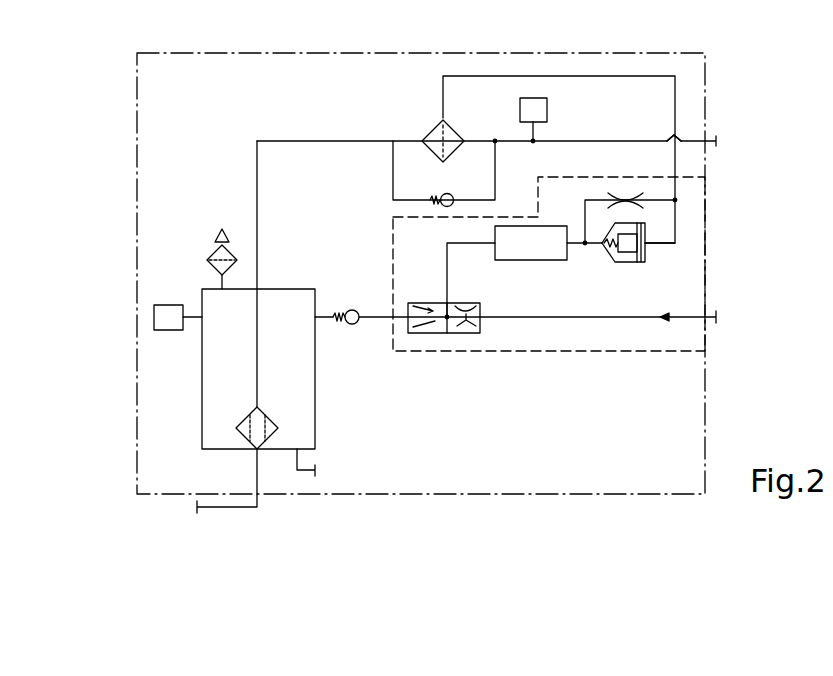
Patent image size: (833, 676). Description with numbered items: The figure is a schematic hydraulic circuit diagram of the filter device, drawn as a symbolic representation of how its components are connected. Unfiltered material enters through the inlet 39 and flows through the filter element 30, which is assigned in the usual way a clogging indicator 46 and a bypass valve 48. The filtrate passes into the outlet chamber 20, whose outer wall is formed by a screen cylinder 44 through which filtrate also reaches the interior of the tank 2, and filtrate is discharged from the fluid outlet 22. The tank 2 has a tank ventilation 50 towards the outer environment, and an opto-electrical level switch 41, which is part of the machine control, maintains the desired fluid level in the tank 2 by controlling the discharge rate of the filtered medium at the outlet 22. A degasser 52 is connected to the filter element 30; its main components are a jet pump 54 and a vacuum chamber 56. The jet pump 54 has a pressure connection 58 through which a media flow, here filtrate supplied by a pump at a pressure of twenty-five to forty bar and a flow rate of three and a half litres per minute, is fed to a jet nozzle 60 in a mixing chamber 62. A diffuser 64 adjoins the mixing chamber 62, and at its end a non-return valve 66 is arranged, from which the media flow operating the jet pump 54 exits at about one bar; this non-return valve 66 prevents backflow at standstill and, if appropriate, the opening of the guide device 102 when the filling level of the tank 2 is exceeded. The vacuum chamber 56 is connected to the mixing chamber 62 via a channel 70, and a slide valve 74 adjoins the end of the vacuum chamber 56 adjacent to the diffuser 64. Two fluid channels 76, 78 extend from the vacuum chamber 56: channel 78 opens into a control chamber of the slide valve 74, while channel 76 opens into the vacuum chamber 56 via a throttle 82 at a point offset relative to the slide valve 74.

The tank 2 is at (318, 398).
The outlet chamber 20 is at (252, 412).
The fluid outlet 22 is at (262, 496).
The filter element 30 is at (434, 128).
The inlet 39 is at (705, 141).
The opto-electrical level switch 41 is at (156, 328).
The screen cylinder 44 is at (272, 418).
The clogging indicator 46 is at (548, 108).
The bypass valve 48 is at (442, 195).
The tank ventilation 50 is at (212, 248).
The degasser 52 is at (580, 352).
The jet pump 54 is at (438, 334).
The vacuum chamber 56 is at (538, 250).
The pressure connection 58 is at (707, 312).
The jet nozzle 60 is at (467, 334).
The mixing chamber 62 is at (458, 307).
The diffuser 64 is at (431, 310).
The non-return valve 66 is at (344, 311).
The channel 70 is at (448, 276).
The slide valve 74 is at (629, 258).
The fluid channel 76 is at (675, 128).
The fluid channel 78 is at (675, 128).
The throttle 82 is at (620, 197).
The guide device 102 is at (318, 326).